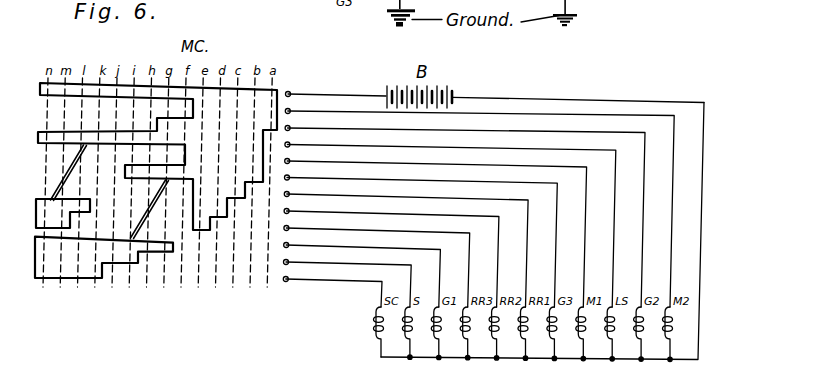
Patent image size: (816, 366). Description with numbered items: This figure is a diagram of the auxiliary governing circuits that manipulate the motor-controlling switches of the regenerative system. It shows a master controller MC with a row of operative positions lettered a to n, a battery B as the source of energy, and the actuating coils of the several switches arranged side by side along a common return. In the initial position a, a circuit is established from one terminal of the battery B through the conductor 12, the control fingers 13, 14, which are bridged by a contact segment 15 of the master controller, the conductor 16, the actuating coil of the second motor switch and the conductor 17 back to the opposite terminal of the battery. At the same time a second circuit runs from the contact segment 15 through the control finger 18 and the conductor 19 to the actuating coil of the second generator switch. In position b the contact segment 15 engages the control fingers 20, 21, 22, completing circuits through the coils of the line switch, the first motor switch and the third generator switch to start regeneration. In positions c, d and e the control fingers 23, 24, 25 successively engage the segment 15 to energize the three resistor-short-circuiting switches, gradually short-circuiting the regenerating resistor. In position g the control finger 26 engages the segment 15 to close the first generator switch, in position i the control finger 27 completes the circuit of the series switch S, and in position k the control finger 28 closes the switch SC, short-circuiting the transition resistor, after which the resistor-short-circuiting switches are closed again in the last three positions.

The conductor 12 is at (351, 96).
The control finger 13 is at (290, 92).
The control finger 14 is at (298, 100).
The contact segment 15 is at (156, 180).
The conductor 16 is at (349, 112).
The conductor 17 is at (711, 274).
The control finger 18 is at (298, 117).
The conductor 19 is at (352, 129).
The control finger 20 is at (297, 134).
The control finger 21 is at (297, 150).
The control finger 22 is at (297, 166).
The control finger 23 is at (297, 183).
The control finger 24 is at (297, 200).
The control finger 25 is at (296, 217).
The control finger 26 is at (296, 234).
The control finger 27 is at (296, 251).
The control finger 28 is at (296, 268).